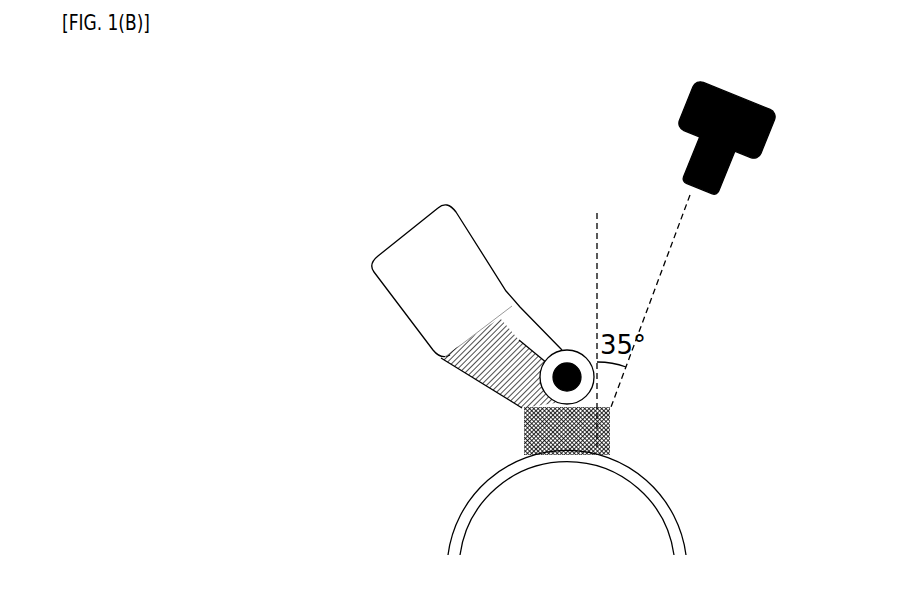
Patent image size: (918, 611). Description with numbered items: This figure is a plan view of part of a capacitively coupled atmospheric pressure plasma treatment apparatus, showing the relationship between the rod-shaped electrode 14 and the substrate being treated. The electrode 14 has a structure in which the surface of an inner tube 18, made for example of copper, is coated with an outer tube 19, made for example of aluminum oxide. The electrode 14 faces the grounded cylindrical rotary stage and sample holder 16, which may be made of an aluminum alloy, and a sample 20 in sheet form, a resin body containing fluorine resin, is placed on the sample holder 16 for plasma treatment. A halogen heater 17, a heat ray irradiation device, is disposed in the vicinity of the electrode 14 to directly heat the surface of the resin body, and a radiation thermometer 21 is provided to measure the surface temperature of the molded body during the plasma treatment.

The electrode 14 is at (434, 375).
The cylindrical rotary stage and sample holder 16 is at (520, 515).
The halogen heater 17 is at (415, 243).
The inner tube 18 is at (527, 343).
The outer tube 19 is at (517, 313).
The sample 20 is at (637, 467).
The radiation thermometer 21 is at (717, 142).